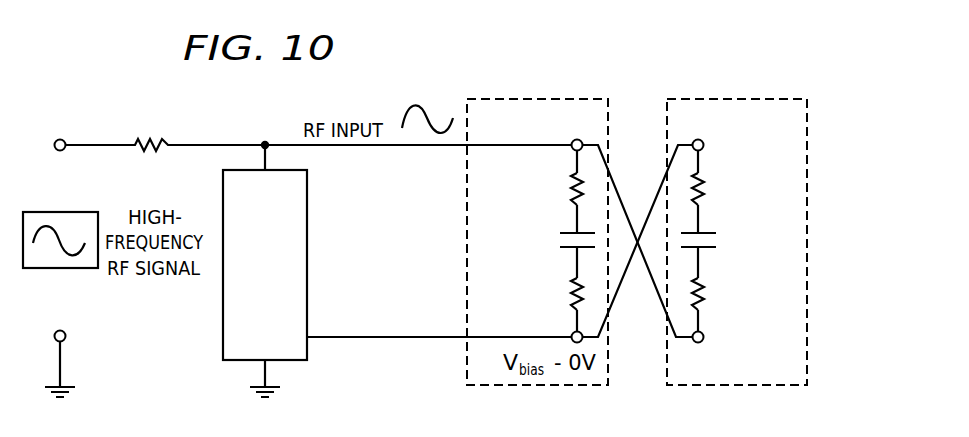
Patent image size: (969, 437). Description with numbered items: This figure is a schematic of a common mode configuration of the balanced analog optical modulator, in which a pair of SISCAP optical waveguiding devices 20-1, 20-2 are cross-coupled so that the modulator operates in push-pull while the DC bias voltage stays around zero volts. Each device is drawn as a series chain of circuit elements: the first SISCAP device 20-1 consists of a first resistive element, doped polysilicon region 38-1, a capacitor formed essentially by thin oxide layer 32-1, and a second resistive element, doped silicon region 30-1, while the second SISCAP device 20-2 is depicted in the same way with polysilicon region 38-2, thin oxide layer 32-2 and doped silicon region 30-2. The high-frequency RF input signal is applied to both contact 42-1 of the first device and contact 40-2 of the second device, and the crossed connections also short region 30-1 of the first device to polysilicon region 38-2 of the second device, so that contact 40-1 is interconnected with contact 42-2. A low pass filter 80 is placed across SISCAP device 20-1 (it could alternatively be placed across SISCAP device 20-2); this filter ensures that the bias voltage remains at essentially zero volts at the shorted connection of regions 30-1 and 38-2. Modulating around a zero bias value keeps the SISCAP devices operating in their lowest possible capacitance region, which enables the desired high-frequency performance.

The first SISCAP optical waveguiding device 20-1 is at (533, 98).
The second SISCAP optical waveguiding device 20-2 is at (734, 98).
The contact area of SISCAP device 20-1 42-1 is at (573, 140).
The contact area of SISCAP device 20-2 42-2 is at (705, 140).
The doped polysilicon region 38-1 is at (571, 190).
The polysilicon region of SISCAP device 20-2 38-2 is at (705, 190).
The thin oxide layer 32-1 is at (559, 240).
The thin oxide layer of SISCAP device 20-2 32-2 is at (718, 240).
The doped silicon region 30-1 is at (571, 287).
The doped silicon region of SISCAP device 20-2 30-2 is at (705, 287).
The contact of SISCAP device 20-1 40-1 is at (572, 334).
The contact area of SISCAP device 20-2 40-2 is at (704, 337).
The low pass filter 80 is at (307, 259).